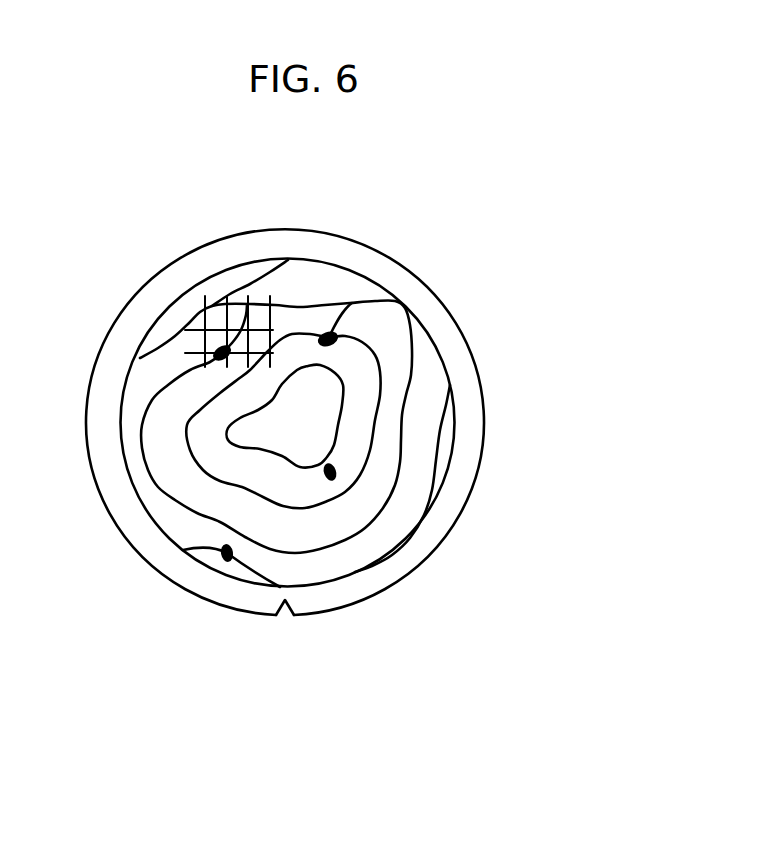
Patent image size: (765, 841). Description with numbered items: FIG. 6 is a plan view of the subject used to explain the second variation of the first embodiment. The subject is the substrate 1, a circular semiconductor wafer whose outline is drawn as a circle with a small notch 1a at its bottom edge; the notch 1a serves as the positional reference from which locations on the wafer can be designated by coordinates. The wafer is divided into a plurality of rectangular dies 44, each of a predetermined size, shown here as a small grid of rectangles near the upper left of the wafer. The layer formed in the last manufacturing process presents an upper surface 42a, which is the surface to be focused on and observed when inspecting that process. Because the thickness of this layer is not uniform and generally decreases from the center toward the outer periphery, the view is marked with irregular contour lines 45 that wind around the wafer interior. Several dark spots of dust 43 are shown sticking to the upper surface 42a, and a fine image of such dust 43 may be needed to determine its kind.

The substrate 1 is at (402, 220).
The notch 1a is at (288, 642).
The dust 43 is at (398, 301).
The dies 44 is at (207, 325).
The contour lines 45 is at (381, 512).
The upper surface of the layer 42a is at (343, 517).